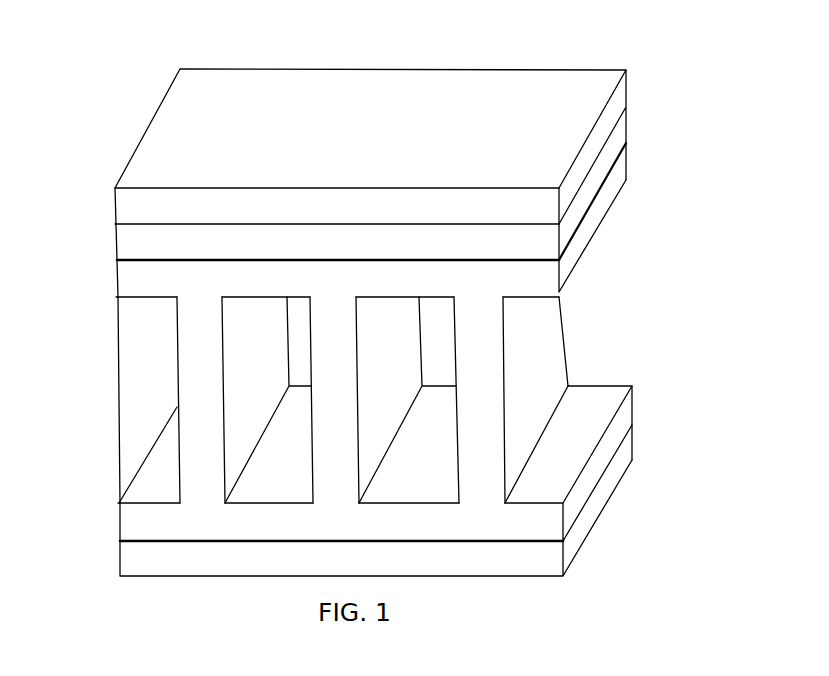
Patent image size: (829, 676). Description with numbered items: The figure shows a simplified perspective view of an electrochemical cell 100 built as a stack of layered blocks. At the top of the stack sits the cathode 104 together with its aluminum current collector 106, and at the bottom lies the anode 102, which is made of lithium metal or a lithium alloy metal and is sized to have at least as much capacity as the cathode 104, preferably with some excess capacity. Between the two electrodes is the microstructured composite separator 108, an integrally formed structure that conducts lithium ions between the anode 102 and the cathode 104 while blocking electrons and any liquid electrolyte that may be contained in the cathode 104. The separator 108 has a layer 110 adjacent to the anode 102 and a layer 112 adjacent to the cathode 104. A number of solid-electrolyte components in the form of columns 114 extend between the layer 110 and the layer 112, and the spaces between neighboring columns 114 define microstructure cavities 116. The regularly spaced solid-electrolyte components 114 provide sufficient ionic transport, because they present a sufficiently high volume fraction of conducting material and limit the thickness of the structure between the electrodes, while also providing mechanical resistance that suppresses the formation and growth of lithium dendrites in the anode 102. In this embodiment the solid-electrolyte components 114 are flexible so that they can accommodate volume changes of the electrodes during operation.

The electrochemical cell 100 is at (661, 86).
The anode 102 is at (570, 553).
The cathode 104 is at (122, 245).
The aluminum current collector 106 is at (147, 131).
The microstructured composite separator 108 is at (688, 416).
The layer 110 is at (120, 504).
The layer 112 is at (115, 292).
The solid-electrolyte components 114 is at (178, 370).
The microstructure cavities 116 is at (228, 392).